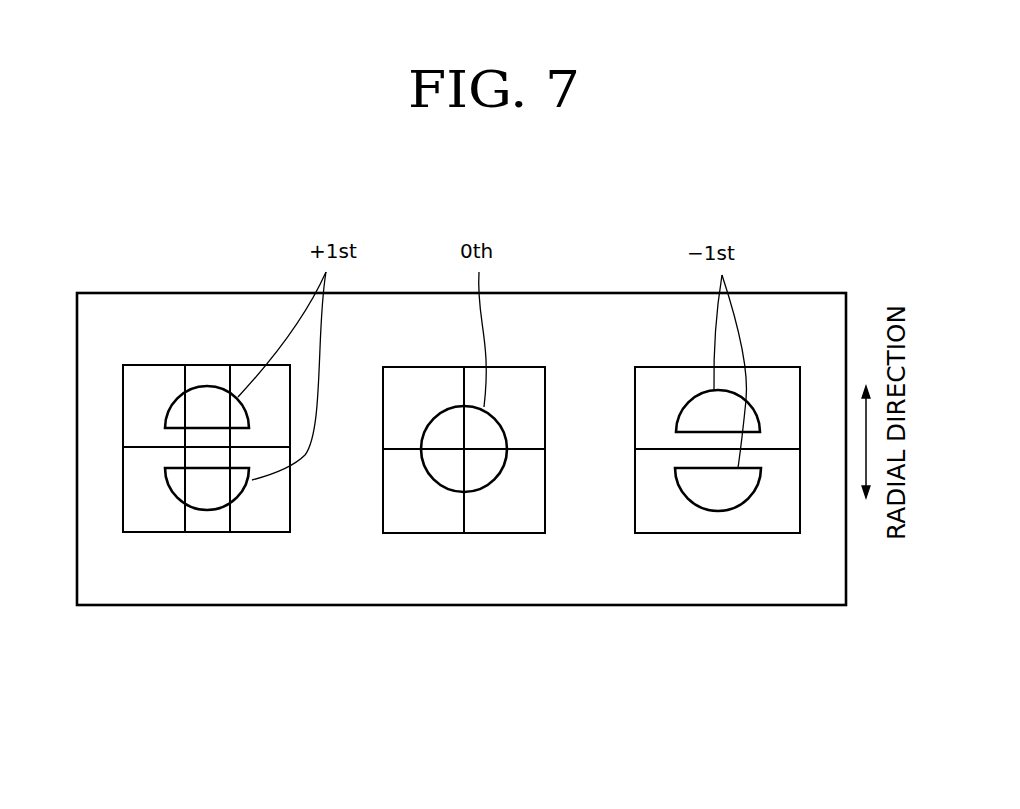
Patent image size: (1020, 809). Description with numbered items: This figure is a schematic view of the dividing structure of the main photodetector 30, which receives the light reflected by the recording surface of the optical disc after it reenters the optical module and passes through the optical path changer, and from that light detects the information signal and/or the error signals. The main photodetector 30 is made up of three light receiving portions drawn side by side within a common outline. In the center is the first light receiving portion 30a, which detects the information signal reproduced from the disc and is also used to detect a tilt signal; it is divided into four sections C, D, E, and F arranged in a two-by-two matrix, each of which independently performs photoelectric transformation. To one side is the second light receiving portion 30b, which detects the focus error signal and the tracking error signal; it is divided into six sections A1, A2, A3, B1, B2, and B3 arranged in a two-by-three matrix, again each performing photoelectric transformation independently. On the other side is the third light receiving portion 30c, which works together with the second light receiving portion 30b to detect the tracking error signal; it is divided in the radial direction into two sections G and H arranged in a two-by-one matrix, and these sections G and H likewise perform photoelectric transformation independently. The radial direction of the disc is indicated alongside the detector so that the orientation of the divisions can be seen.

The main photodetector 30 is at (610, 273).
The first light receiving portion 30a is at (464, 518).
The second light receiving portion 30b is at (206, 499).
The third light receiving portion 30c is at (717, 519).
The section A1 is at (154, 406).
The section A2 is at (204, 375).
The section A3 is at (260, 406).
The section B1 is at (154, 489).
The section B2 is at (212, 522).
The section B3 is at (260, 489).
The section C is at (423, 408).
The section D is at (504, 408).
The section E is at (423, 491).
The section F is at (488, 533).
The section G is at (717, 408).
The section H is at (717, 533).